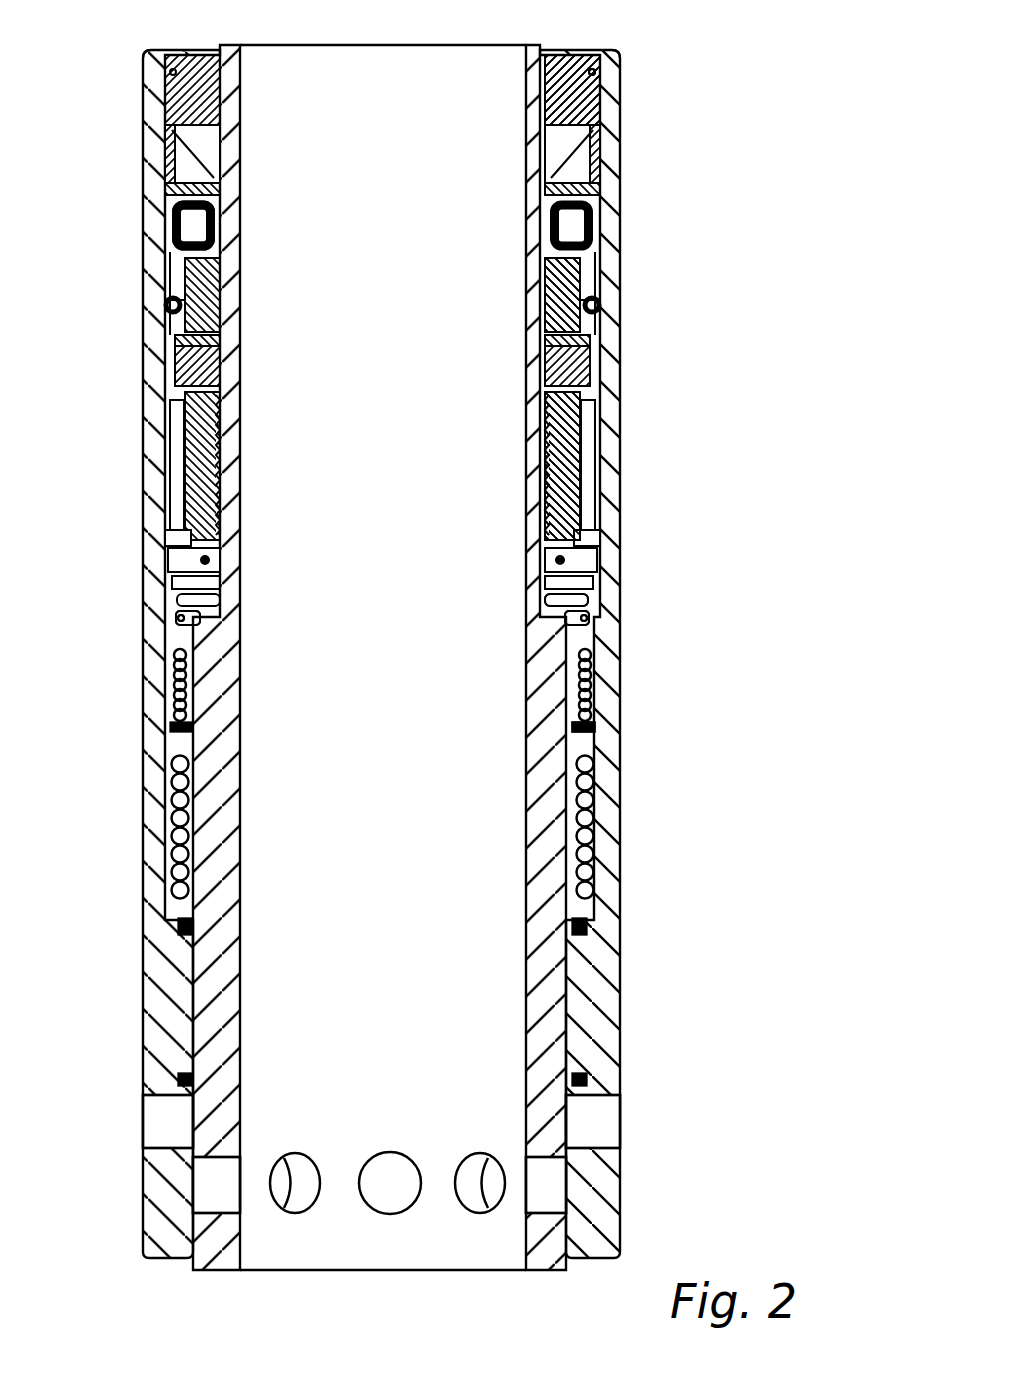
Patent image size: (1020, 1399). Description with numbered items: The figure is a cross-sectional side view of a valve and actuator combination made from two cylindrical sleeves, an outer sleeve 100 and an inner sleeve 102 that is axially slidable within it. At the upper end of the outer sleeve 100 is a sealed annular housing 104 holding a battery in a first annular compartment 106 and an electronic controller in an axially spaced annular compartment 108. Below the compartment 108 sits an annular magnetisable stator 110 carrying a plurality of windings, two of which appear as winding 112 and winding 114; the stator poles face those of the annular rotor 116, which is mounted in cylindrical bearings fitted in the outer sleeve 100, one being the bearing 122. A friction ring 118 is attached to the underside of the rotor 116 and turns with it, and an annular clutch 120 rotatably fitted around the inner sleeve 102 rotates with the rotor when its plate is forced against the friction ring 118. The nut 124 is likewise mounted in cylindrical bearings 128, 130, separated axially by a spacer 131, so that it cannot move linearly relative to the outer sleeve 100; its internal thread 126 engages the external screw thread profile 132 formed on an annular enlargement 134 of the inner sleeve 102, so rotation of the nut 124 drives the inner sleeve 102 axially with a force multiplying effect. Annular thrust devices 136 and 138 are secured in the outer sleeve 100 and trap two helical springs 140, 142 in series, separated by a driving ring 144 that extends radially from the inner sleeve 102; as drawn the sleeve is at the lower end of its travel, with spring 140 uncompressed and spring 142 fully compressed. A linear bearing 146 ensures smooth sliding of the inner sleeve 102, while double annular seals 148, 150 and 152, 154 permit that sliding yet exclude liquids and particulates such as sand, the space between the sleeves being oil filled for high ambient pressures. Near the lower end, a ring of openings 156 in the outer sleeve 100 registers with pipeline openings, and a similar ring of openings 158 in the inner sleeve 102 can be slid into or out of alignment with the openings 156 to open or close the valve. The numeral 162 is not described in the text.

The outer sleeve 100 is at (607, 992).
The inner sleeve 102 is at (527, 1040).
The sealed annular housing 104 is at (607, 50).
The first annular compartment 106 is at (608, 92).
The axially spaced annular compartment 108 is at (608, 133).
The annular magnetisable stator 110 is at (590, 222).
The winding 112 is at (605, 198).
The winding 114 is at (170, 226).
The annular rotor 116 is at (548, 280).
The friction ring 118 is at (545, 345).
The annular clutch 120 is at (540, 378).
The cylindrical bearing 122 is at (605, 330).
The nut 124 is at (548, 479).
The interengaging thread 126 is at (545, 420).
The cylindrical bearing 128 is at (592, 440).
The cylindrical bearing 130 is at (598, 572).
The spacer 131 is at (610, 492).
The external screw thread profile 132 is at (545, 540).
The annular enlargement 134 is at (548, 497).
The annular thrust device 136 is at (600, 618).
The annular thrust device 138 is at (598, 755).
The helical spring 140 is at (598, 650).
The helical spring 142 is at (594, 733).
The driving ring 144 is at (590, 680).
The linear bearing 146 is at (590, 768).
The annular seal 148 is at (538, 115).
The annular seal 150 is at (545, 185).
The annular seal 152 is at (592, 925).
The annular seal 154 is at (592, 1078).
The ring of openings 156 is at (607, 1130).
The ring of openings 158 is at (540, 1170).
The O-ring 162 is at (598, 305).